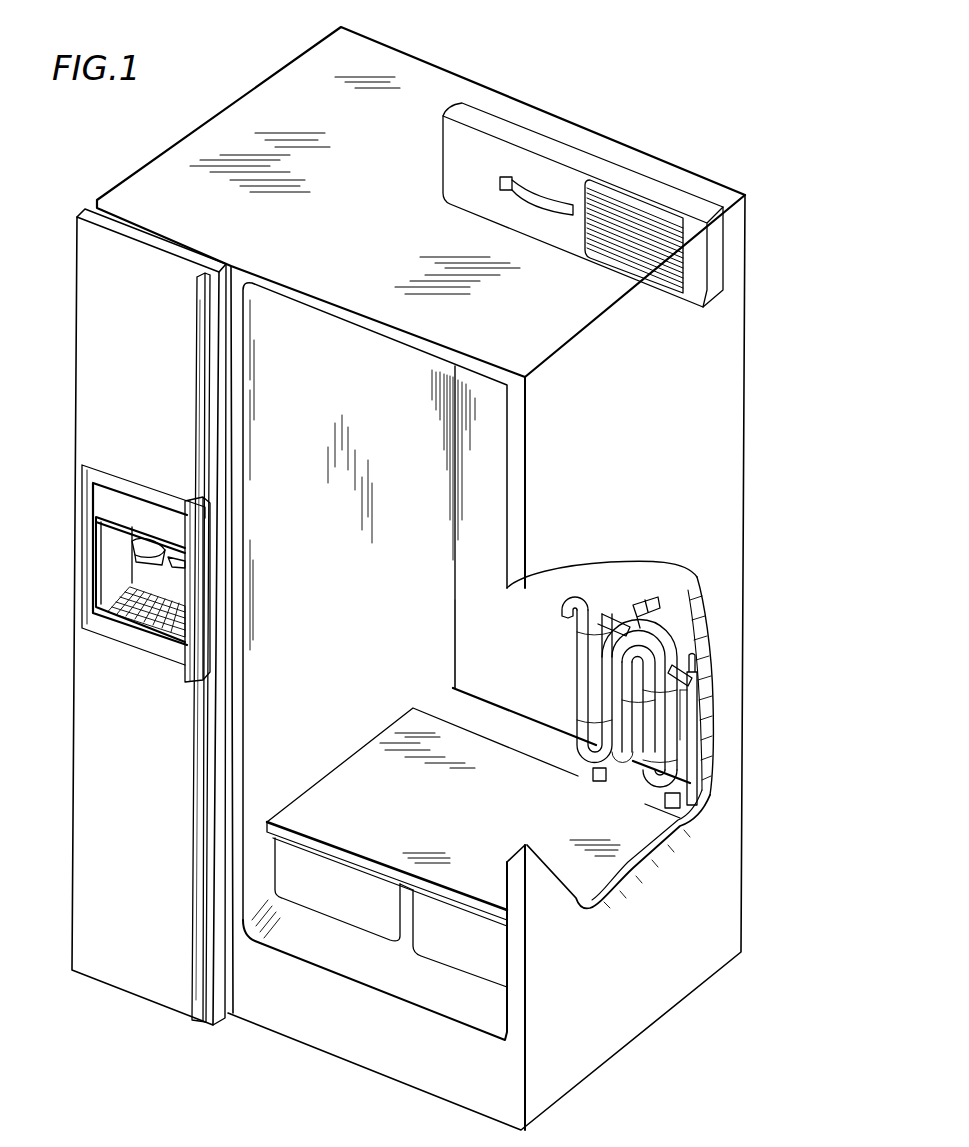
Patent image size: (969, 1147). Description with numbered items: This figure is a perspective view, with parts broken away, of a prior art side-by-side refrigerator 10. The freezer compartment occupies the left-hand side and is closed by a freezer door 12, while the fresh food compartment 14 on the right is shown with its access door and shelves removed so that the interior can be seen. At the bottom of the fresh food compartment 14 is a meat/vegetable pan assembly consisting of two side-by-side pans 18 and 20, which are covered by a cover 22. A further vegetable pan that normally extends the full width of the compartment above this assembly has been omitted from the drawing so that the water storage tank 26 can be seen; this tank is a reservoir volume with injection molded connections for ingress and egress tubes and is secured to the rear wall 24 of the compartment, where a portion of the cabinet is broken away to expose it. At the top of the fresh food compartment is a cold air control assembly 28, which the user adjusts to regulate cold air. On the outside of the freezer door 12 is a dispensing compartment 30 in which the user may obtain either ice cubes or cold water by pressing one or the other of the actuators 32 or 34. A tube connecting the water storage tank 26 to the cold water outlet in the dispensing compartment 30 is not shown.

The refrigerator 10 is at (584, 116).
The freezer door 12 is at (146, 366).
The fresh food compartment 14 is at (296, 316).
The pan 18 is at (337, 895).
The pan 20 is at (452, 943).
The cover 22 is at (410, 818).
The rear wall 24 is at (522, 655).
The water storage tank 26 is at (626, 604).
The cold air control assembly 28 is at (655, 191).
The dispensing compartment 30 is at (100, 568).
The actuator 32 is at (147, 548).
The actuator 34 is at (177, 562).